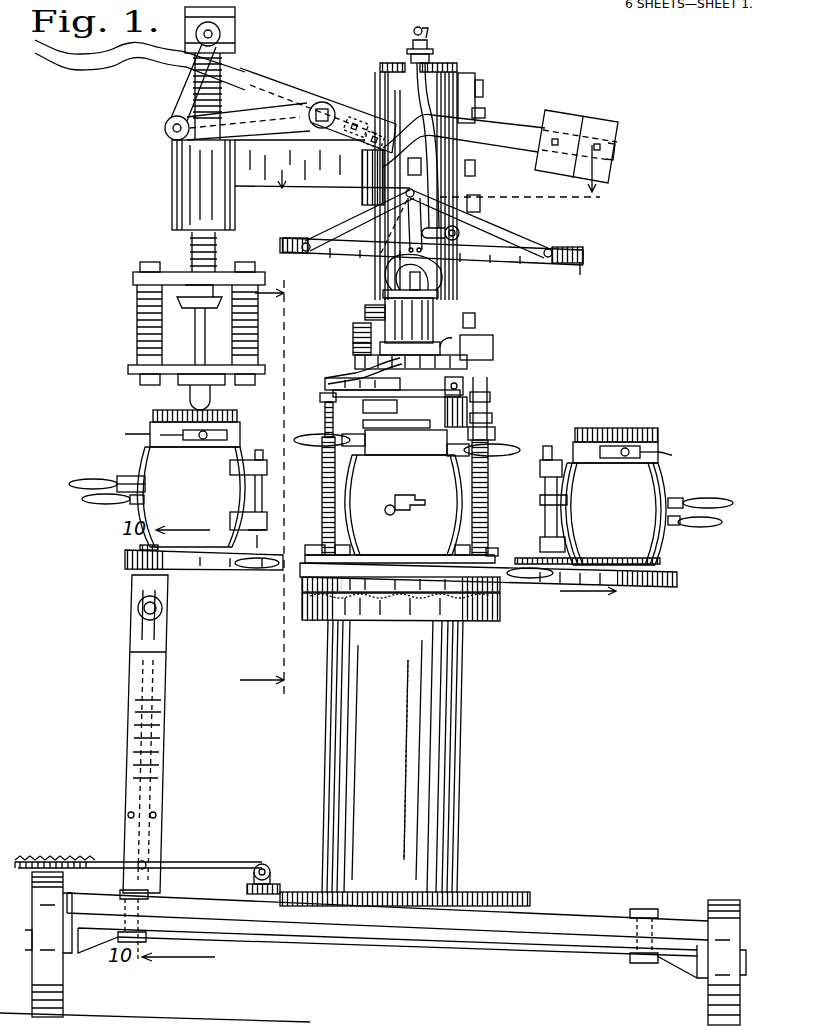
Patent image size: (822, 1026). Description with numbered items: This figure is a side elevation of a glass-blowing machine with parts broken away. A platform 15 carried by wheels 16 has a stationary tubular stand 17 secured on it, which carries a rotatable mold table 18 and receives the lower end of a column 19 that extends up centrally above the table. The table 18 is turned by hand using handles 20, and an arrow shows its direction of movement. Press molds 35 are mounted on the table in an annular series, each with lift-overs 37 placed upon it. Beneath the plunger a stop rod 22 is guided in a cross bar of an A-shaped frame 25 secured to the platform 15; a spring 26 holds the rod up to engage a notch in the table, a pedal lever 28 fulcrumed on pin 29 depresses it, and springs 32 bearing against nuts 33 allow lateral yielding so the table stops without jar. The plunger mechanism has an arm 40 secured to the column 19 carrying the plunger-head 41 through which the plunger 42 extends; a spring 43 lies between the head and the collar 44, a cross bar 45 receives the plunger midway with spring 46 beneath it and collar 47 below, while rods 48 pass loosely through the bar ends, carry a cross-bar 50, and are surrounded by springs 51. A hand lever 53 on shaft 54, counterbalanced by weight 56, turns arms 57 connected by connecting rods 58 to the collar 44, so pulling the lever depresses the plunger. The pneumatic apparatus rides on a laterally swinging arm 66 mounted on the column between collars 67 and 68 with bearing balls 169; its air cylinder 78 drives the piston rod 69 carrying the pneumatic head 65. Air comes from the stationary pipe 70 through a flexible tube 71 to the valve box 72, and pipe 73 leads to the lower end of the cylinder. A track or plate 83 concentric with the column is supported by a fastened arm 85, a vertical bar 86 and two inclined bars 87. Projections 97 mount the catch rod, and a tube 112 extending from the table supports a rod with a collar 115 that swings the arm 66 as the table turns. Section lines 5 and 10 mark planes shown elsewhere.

The section line 5— 5 is at (592, 207).
The section line 10— 10 is at (325, 381).
The platform 15 is at (573, 925).
The wheels 16 is at (708, 905).
The stationary tubular stand 17 is at (430, 764).
The mold table 18 is at (228, 570).
The column 19 is at (370, 262).
The handles 20 is at (533, 580).
The stop rod 22 is at (145, 571).
The A-shaped frame 25 is at (163, 745).
The spring 26 is at (547, 501).
The pedal lever 28 is at (190, 866).
The pin 29 is at (265, 862).
The spring 32 is at (249, 499).
The nut 33 is at (162, 612).
The press molds 35 is at (401, 487).
The lift-overs 37 is at (403, 442).
The arm 40 is at (322, 176).
The plunger-head 41 is at (200, 190).
The plunger 42 is at (195, 333).
The spring 43 is at (225, 70).
The collar 44 is at (222, 33).
The cross bar 45 is at (170, 270).
The spring 46 is at (217, 258).
The collar 47 is at (205, 310).
The rods 48 is at (255, 316).
The cross-bar 50 is at (278, 370).
The springs 51 is at (270, 340).
The hand lever 53 is at (72, 63).
The shaft 54 is at (323, 102).
The weight 56 is at (570, 125).
The arms 57 is at (248, 121).
The connecting rods 58 is at (185, 90).
The pneumatic head 65 is at (363, 406).
The laterally swinging arm 66 is at (353, 347).
The collar 67 is at (355, 361).
The collar 68 is at (353, 328).
The piston rod 69 is at (492, 418).
The stationary pipe 70 is at (430, 38).
The flexible tube 71 is at (418, 112).
The valve box 72 is at (458, 230).
The pipe 73 is at (440, 275).
The air cylinder 78 is at (400, 310).
The plate 83 is at (582, 278).
The fastened arm 85 is at (408, 167).
The vertical bar 86 is at (362, 182).
The inclined bars 87 is at (545, 232).
The projections 97 is at (500, 315).
The tube 112 is at (510, 505).
The collar 115 is at (512, 397).
The bearing balls 169 is at (493, 355).